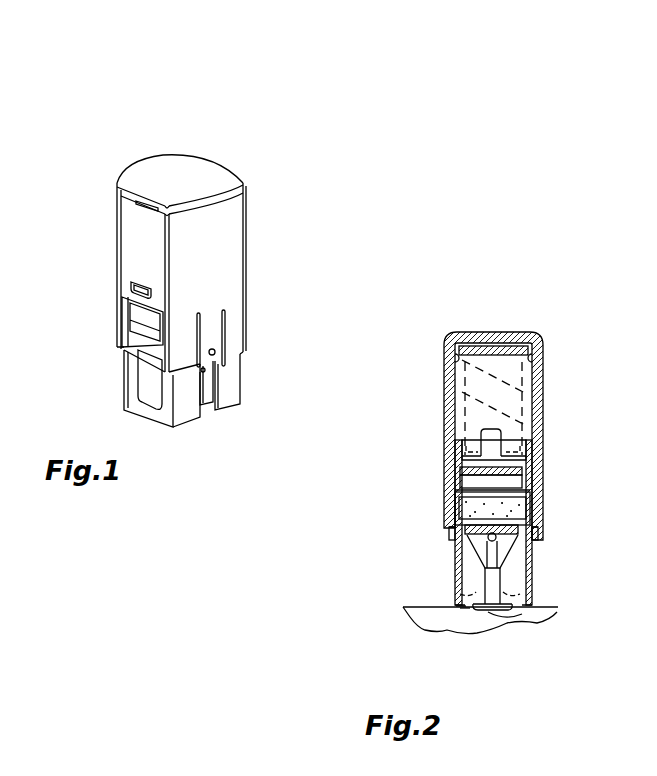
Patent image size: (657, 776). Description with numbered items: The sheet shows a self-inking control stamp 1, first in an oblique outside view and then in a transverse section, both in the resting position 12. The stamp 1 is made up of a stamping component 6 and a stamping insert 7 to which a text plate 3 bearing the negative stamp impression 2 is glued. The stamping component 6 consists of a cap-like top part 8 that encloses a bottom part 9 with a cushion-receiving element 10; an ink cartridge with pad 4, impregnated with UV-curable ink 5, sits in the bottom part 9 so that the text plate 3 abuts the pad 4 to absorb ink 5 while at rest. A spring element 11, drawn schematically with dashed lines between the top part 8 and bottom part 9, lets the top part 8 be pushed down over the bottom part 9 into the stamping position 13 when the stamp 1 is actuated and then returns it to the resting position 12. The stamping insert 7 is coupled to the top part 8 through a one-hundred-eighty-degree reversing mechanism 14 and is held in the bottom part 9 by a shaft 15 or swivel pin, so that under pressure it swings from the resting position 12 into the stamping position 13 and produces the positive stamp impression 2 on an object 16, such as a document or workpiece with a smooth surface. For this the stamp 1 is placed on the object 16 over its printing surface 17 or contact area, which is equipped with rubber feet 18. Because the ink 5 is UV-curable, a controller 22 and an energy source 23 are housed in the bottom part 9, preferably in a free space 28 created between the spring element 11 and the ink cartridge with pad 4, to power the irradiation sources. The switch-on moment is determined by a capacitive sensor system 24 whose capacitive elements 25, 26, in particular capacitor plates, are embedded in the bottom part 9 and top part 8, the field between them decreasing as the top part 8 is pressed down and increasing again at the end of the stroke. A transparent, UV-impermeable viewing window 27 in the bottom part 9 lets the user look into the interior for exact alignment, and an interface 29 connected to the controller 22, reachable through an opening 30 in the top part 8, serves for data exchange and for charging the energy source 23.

In FIG. 1, the stamp 1 is at (104, 163).
In FIG. 2, the stamp 1 is at (408, 324).
In FIG. 2, the stamp impression 2 is at (520, 613).
In FIG. 2, the text plate 3 is at (478, 529).
In FIG. 1, the ink cartridge with pad 4 is at (148, 325).
In FIG. 2, the ink cartridge with pad 4 is at (457, 510).
In FIG. 2, the UV-curable ink 5 is at (507, 509).
In FIG. 2, the stamping component 6 is at (458, 406).
In FIG. 1, the stamping insert 7 is at (205, 371).
In FIG. 2, the stamping insert 7 is at (496, 550).
In FIG. 1, the top part 8 is at (138, 218).
In FIG. 2, the top part 8 is at (448, 383).
In FIG. 1, the bottom part 9 is at (131, 392).
In FIG. 2, the bottom part 9 is at (455, 577).
In FIG. 1, the cushion-receiving element 10 is at (118, 301).
In FIG. 2, the cushion-receiving element 10 is at (449, 494).
In FIG. 2, the spring element 11 is at (537, 406).
In FIG. 2, the resting position 12 is at (557, 381).
In FIG. 2, the stamping position 13 is at (457, 598).
In FIG. 1, the reversing mechanism 14 is at (207, 424).
In FIG. 2, the reversing mechanism 14 is at (493, 580).
In FIG. 2, the shaft 15 is at (489, 538).
In FIG. 2, the object 16 is at (505, 627).
In FIG. 2, the printing surface 17 is at (460, 608).
In FIG. 2, the rubber feet 18 is at (462, 609).
In FIG. 2, the controller 22 is at (520, 463).
In FIG. 2, the energy source 23 is at (500, 484).
In FIG. 2, the capacitive sensor system 24 is at (546, 522).
In FIG. 2, the capacitive element 25 is at (538, 531).
In FIG. 2, the capacitive element 26 is at (538, 537).
In FIG. 1, the viewing window 27 is at (150, 389).
In FIG. 2, the free space 28 is at (455, 452).
In FIG. 1, the interface 29 is at (150, 287).
In FIG. 1, the opening 30 is at (132, 284).